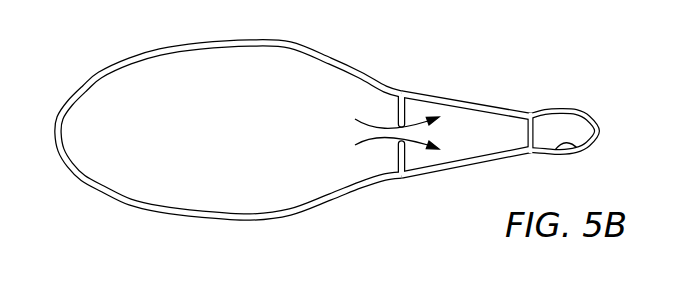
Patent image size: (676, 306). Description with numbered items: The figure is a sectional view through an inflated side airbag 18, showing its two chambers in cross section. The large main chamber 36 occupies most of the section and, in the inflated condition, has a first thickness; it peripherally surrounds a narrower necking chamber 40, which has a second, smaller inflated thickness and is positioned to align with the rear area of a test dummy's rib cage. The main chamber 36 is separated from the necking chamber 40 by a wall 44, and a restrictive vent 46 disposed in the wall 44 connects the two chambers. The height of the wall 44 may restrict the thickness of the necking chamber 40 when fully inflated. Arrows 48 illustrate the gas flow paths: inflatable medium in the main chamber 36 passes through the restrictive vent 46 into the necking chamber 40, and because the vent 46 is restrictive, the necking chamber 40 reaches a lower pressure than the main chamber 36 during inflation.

The airbag 18 is at (463, 98).
The main chamber 36 is at (213, 138).
The necking chamber 40 is at (464, 143).
The wall 44 is at (400, 147).
The restrictive vent 46 is at (399, 126).
The arrows showing gas flow paths 48 is at (355, 118).